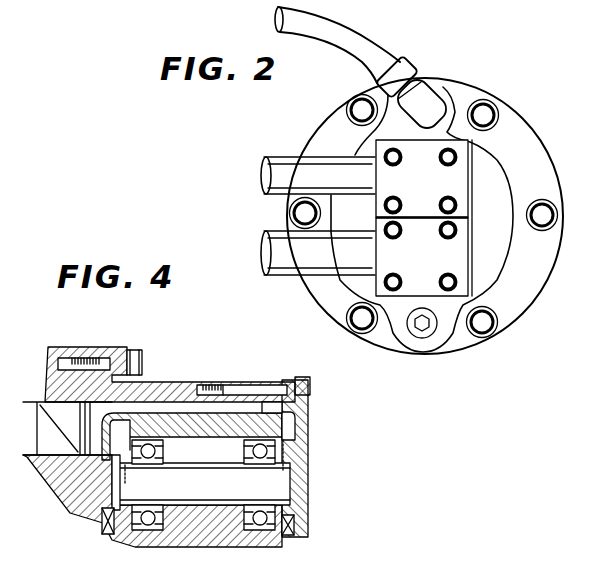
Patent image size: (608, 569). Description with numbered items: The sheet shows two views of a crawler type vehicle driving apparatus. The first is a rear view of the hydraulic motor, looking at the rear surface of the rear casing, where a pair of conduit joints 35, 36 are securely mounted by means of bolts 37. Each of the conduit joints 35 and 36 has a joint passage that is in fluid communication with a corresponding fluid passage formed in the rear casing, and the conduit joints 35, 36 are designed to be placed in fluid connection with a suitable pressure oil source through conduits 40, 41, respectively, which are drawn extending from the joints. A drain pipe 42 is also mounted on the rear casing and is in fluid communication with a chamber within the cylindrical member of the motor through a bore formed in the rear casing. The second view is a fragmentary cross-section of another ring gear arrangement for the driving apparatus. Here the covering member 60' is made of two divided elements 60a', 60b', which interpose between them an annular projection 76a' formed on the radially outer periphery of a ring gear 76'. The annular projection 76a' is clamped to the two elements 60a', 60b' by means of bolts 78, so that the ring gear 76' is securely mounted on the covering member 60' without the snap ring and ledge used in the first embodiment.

In FIG. 2, the conduit joint 35 is at (462, 176).
In FIG. 2, the conduit joint 36 is at (462, 262).
In FIG. 2, the bolts 37 is at (452, 228).
In FIG. 2, the conduit 40 is at (282, 165).
In FIG. 2, the conduit 41 is at (276, 244).
In FIG. 2, the drain pipe 42 is at (430, 108).
In FIG. 4, the covering member 60' is at (233, 458).
In FIG. 4, the divided element 60a' is at (245, 475).
In FIG. 4, the divided element 60b' is at (170, 371).
In FIG. 4, the ring gear 76' is at (280, 381).
In FIG. 4, the annular projection 76a' is at (242, 366).
In FIG. 4, the bolts 78 is at (300, 380).